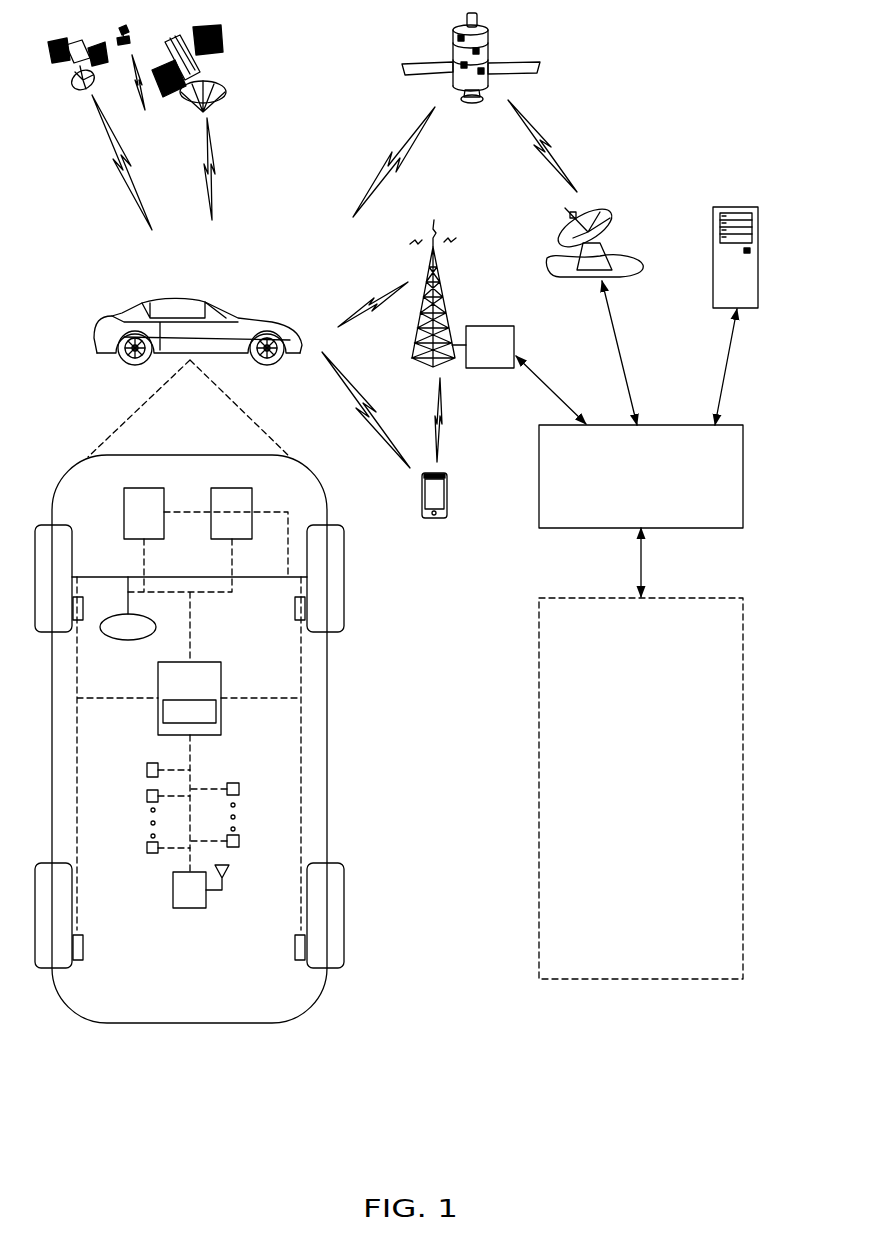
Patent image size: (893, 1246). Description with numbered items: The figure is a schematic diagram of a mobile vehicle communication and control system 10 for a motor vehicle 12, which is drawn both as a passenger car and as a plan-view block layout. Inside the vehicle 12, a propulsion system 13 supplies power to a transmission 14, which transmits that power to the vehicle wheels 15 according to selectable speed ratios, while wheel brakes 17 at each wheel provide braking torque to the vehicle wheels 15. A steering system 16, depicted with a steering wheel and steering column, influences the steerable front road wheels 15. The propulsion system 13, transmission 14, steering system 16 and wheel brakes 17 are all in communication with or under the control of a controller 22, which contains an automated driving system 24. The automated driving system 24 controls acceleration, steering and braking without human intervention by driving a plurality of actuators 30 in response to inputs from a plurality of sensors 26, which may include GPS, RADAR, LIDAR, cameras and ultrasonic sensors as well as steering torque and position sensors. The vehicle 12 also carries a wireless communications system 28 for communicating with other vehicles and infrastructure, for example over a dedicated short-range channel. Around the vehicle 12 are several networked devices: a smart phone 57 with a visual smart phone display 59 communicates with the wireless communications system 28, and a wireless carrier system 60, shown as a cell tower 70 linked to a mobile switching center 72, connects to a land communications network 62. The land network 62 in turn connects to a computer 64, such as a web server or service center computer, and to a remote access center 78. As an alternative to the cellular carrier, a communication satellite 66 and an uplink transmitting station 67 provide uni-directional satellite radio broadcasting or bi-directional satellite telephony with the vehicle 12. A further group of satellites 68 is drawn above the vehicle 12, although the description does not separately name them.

The mobile vehicle communication and control system 10 is at (698, 86).
The motor vehicle 12 is at (92, 340).
The propulsion system 13 is at (124, 515).
The transmission 14 is at (252, 503).
The vehicle wheels 15 is at (72, 567).
The steering system 16 is at (128, 640).
The wheel brakes 17 is at (78, 622).
The controller 22 is at (221, 678).
The automated driving system 24 is at (198, 723).
The sensors 26 is at (147, 795).
The wireless communications system 28 is at (188, 908).
The actuators 30 is at (239, 788).
The smart phone 57 is at (445, 510).
The visual smart phone display 59 is at (437, 495).
The wireless carrier system 60 is at (456, 373).
The land communications network 62 is at (742, 482).
The computer 64 is at (758, 272).
The communication satellite 66 is at (488, 46).
The uplink transmitting station 67 is at (622, 255).
The GNSS satellites 68 is at (246, 108).
The cell tower 70 is at (442, 280).
The mobile switching center 72 is at (500, 333).
The remote access center 78 is at (636, 982).